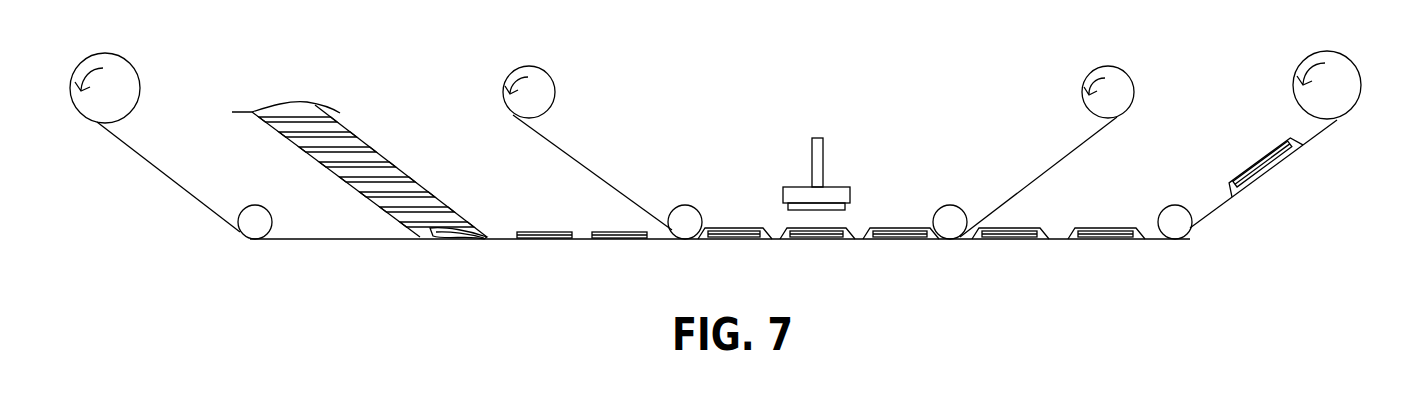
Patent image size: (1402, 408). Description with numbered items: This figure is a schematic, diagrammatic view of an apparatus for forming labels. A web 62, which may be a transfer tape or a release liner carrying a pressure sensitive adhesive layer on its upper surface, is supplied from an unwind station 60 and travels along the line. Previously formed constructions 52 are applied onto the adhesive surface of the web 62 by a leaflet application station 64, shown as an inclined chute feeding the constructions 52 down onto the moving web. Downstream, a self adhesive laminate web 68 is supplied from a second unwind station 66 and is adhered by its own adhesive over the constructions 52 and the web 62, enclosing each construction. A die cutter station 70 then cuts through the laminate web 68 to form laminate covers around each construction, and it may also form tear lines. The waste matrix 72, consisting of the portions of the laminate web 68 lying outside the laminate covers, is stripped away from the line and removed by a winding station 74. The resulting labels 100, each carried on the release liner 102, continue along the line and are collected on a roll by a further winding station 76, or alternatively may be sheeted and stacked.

The construction 52 is at (473, 230).
The unwind station 60 is at (107, 72).
The web 62 is at (160, 170).
The leaflet application station 64 is at (367, 140).
The unwind station 66 is at (512, 75).
The self adhesive laminate web 68 is at (593, 167).
The die cutter station 70 is at (848, 187).
The waste matrix 72 is at (1045, 165).
The winding station 74 is at (1093, 75).
The winding station 76 is at (1313, 62).
The label 100 is at (1095, 225).
The release liner 102 is at (1310, 143).